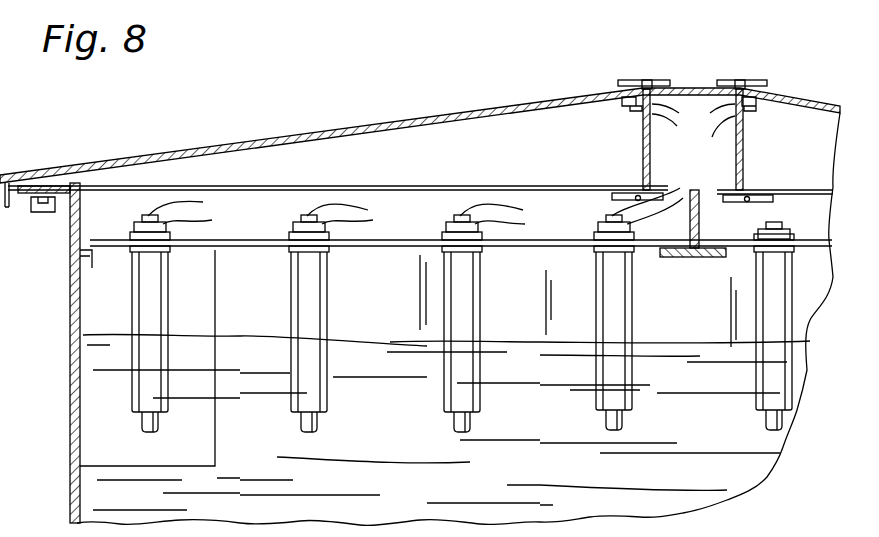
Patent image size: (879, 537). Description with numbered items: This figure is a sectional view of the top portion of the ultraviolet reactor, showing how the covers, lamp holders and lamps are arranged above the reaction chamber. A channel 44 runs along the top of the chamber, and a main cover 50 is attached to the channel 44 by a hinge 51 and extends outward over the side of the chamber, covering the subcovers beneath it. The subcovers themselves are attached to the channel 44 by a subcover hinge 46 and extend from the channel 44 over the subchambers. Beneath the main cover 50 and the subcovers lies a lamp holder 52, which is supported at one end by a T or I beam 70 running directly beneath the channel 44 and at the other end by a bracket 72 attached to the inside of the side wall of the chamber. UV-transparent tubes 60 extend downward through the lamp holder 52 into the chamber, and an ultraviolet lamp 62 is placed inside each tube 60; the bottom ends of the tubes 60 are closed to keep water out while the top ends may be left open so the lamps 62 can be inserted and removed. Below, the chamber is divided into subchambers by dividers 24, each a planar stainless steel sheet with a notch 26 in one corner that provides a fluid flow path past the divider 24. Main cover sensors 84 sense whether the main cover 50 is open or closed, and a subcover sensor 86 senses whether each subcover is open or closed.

The divider 24 is at (536, 323).
The notch 26 is at (208, 287).
The channel 44 is at (643, 160).
The subcover hinge 46 is at (290, 186).
The main cover 50 is at (196, 149).
The hinge 51 is at (740, 82).
The lamp holder 52 is at (405, 246).
The UV-transparent tube 60 is at (143, 296).
The ultraviolet lamp 62 is at (157, 420).
The beam 70 is at (700, 213).
The bracket 72 is at (75, 262).
The main cover sensor 84 is at (648, 107).
The subcover sensor 86 is at (43, 212).